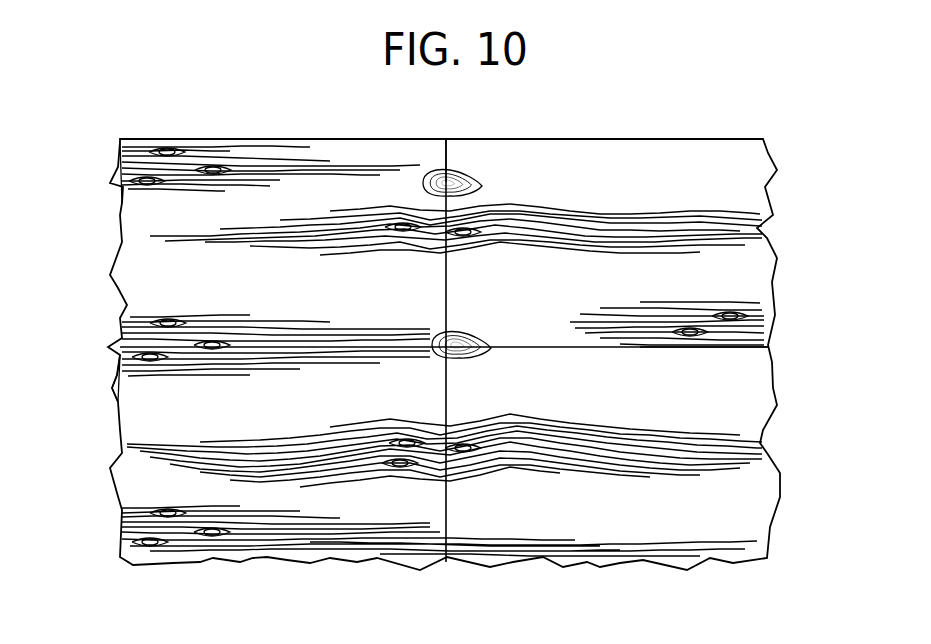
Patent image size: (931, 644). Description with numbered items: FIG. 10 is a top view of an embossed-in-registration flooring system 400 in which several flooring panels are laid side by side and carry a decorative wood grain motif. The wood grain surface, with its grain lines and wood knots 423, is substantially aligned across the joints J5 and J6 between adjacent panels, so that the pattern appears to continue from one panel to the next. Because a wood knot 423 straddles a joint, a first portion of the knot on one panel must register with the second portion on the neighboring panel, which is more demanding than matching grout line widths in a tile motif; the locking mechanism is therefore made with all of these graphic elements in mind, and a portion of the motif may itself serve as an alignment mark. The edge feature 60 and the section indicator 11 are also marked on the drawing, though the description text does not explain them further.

The embossed-in-registration flooring system 400 is at (223, 128).
The panel edge 60 is at (118, 200).
The section line for FIG. 11 is at (66, 246).
The wood knot 423 is at (471, 180).
The joint J5 is at (445, 161).
The joint J6 is at (752, 348).